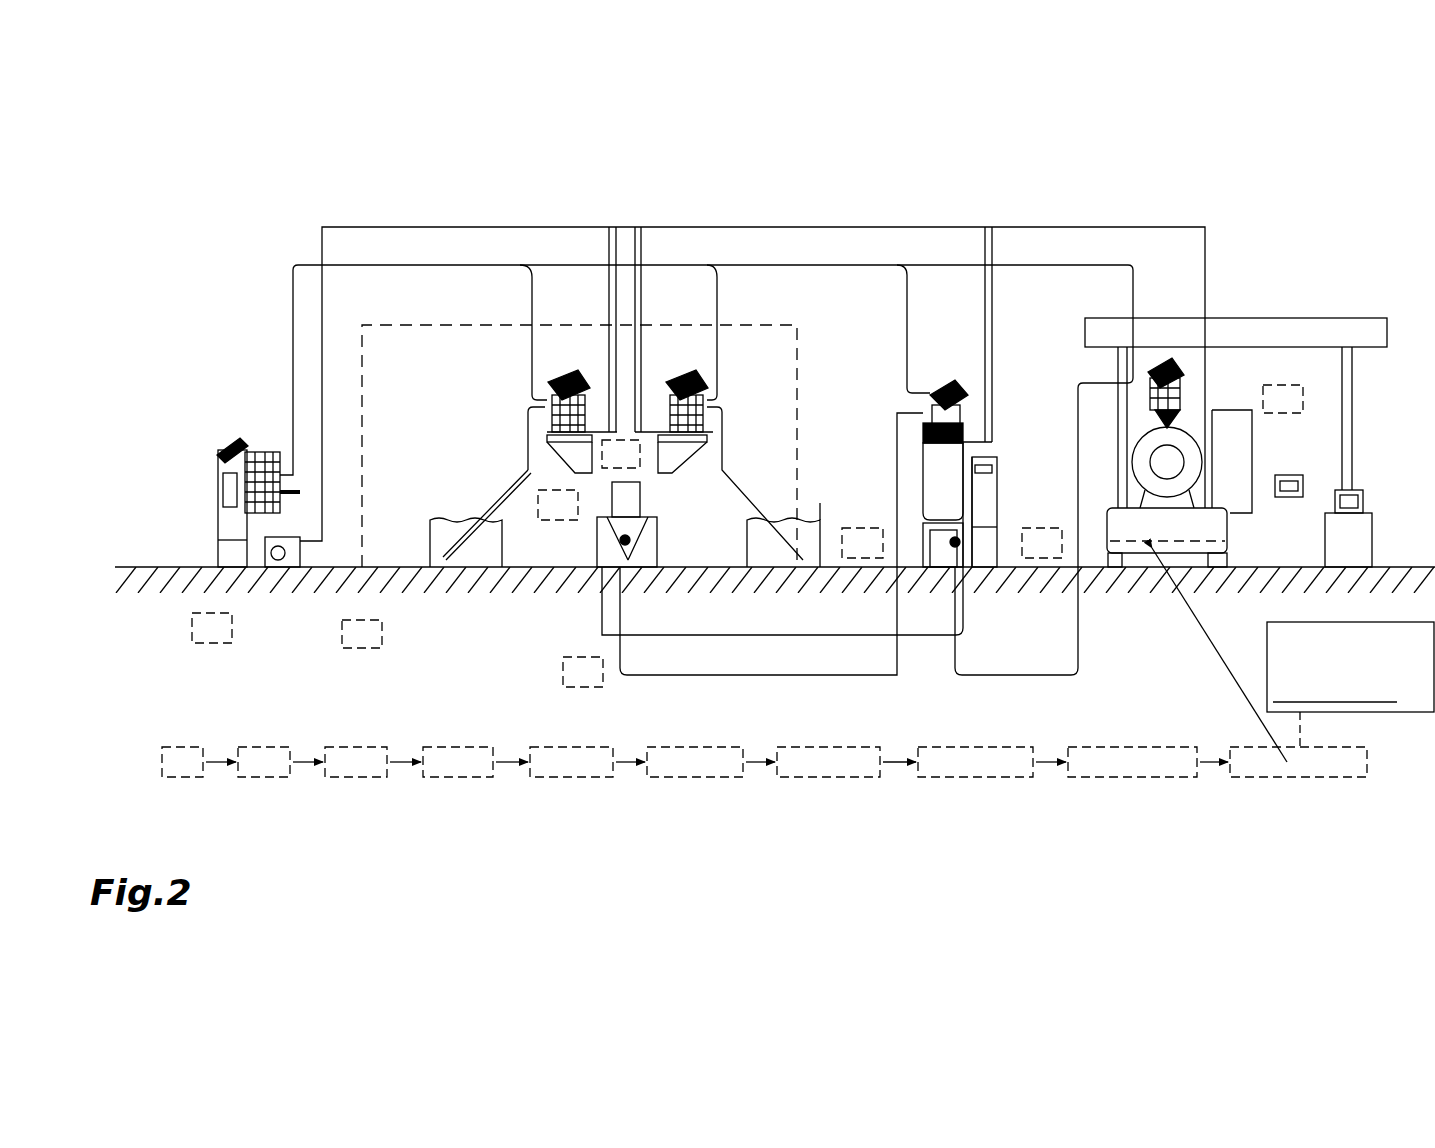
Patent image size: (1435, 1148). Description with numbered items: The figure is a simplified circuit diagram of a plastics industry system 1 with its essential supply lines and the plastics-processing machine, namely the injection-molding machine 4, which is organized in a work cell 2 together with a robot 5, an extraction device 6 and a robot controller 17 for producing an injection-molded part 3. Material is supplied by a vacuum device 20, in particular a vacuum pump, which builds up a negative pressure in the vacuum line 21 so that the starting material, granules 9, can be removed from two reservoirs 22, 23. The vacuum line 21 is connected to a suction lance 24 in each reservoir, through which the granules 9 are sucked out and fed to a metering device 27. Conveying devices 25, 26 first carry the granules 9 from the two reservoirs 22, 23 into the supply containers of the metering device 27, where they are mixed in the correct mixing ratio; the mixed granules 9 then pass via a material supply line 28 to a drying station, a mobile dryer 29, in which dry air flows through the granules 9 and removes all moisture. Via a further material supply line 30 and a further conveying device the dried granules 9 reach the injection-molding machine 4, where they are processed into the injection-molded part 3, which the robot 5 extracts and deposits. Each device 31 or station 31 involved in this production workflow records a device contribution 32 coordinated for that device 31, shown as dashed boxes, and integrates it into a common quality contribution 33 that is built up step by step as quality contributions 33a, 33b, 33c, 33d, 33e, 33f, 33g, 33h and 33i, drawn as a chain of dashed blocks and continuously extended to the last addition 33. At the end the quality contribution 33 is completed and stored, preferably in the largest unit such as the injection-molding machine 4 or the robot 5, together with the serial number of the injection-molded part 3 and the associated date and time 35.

The plastics industry system 1 is at (273, 198).
The work cell 2 is at (1370, 270).
The injection-molded part 3 is at (1355, 497).
The injection-molding machine 4 is at (1150, 445).
The robot 5 is at (1318, 323).
The extraction device 6 is at (1352, 498).
The granules 9 is at (447, 530).
The robot controller 17 is at (1303, 483).
The vacuum device 20 is at (235, 460).
The vacuum line 21 is at (445, 263).
The first reservoir 22 is at (430, 537).
The second reservoir 23 is at (745, 548).
The suction lance 24 is at (497, 507).
The first conveying device 25 is at (545, 397).
The second conveying device 26 is at (700, 392).
The metering device 27 is at (630, 530).
The material supply line 28 is at (685, 672).
The mobile dryer 29 is at (925, 412).
The further material supply line 30 is at (970, 675).
The device or station 31 is at (217, 393).
The device contribution 32 is at (548, 492).
The quality contribution 33 is at (1243, 547).
The quality contribution part 33a is at (210, 640).
The quality contribution part 33b is at (365, 650).
The quality contribution part 33c is at (556, 522).
The quality contribution part 33d is at (620, 470).
The quality contribution part 33e is at (583, 690).
The quality contribution part 33f is at (840, 545).
The quality contribution part 33g is at (1023, 560).
The quality contribution part 33h is at (1093, 572).
The quality contribution part 33i is at (1212, 575).
The date and time 35 is at (1258, 665).